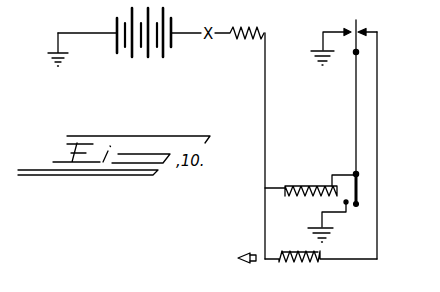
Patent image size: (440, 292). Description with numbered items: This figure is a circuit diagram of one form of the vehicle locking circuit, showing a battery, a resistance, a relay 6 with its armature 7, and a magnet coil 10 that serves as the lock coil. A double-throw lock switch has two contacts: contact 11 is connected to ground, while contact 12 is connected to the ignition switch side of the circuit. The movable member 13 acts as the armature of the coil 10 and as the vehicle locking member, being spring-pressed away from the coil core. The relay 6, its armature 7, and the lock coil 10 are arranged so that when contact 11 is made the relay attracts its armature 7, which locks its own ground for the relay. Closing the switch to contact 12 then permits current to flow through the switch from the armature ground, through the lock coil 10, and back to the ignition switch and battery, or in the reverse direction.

The relay 6 is at (305, 183).
The armature 7 is at (357, 191).
The magnet coil 10 is at (321, 270).
The contact 11 is at (350, 23).
The contact 12 is at (364, 26).
The movable member 13 is at (244, 256).